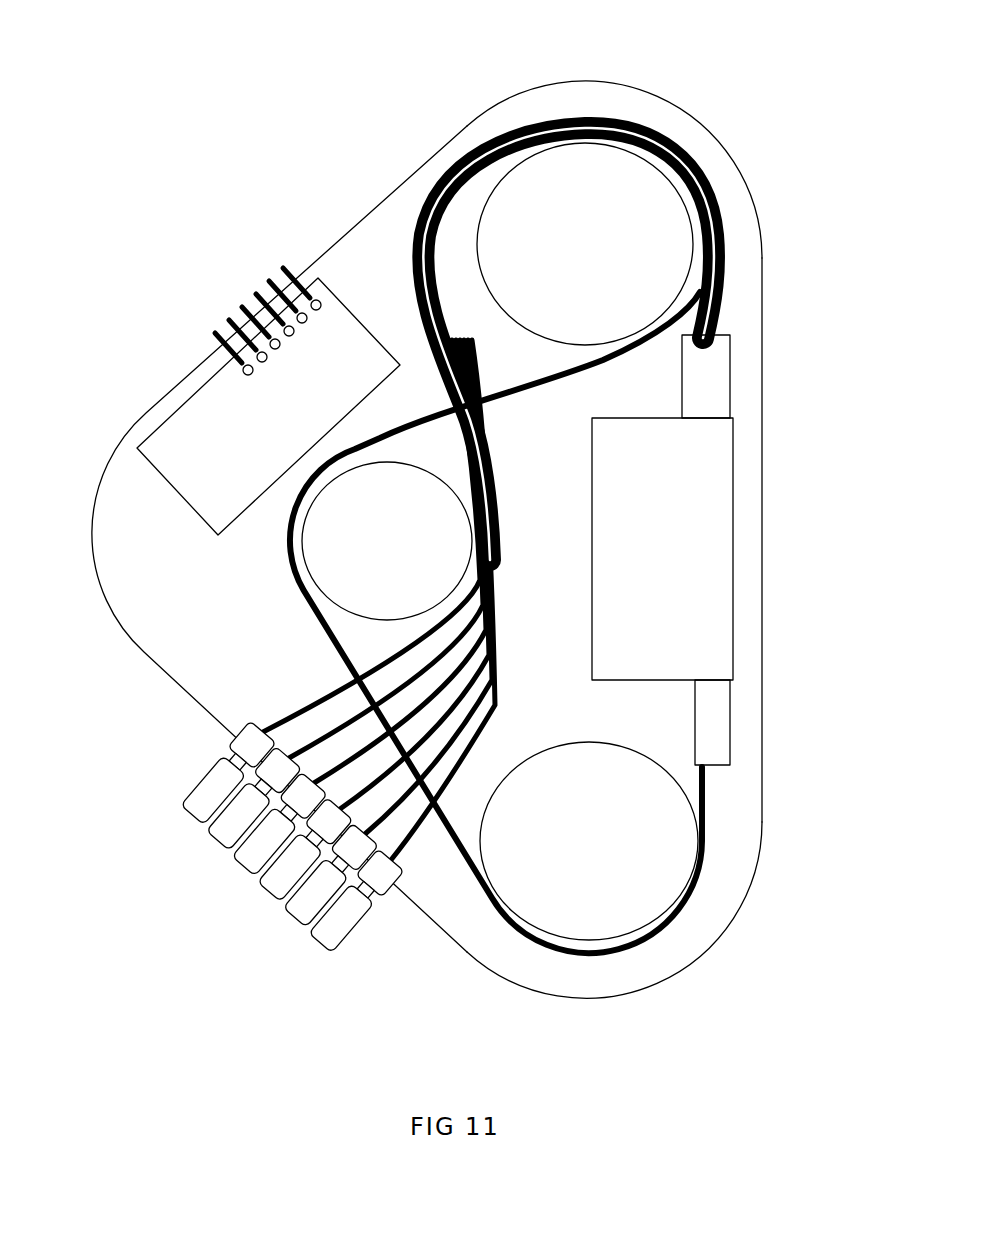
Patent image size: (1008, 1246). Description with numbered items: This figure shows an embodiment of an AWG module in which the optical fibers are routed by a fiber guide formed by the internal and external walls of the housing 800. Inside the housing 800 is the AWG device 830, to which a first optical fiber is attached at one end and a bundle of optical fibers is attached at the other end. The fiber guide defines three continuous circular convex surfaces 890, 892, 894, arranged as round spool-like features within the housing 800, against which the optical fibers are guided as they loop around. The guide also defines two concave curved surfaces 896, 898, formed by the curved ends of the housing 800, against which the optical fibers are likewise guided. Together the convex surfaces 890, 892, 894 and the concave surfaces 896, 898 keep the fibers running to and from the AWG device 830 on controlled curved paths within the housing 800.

The housing 800 is at (407, 178).
The concave curved surface 898 is at (602, 80).
The concave curved surface 896 is at (630, 990).
The continuous circular convex surface 894 is at (655, 240).
The continuous circular convex surface 892 is at (342, 540).
The continuous circular convex surface 890 is at (630, 865).
The AWG device 830 is at (712, 543).